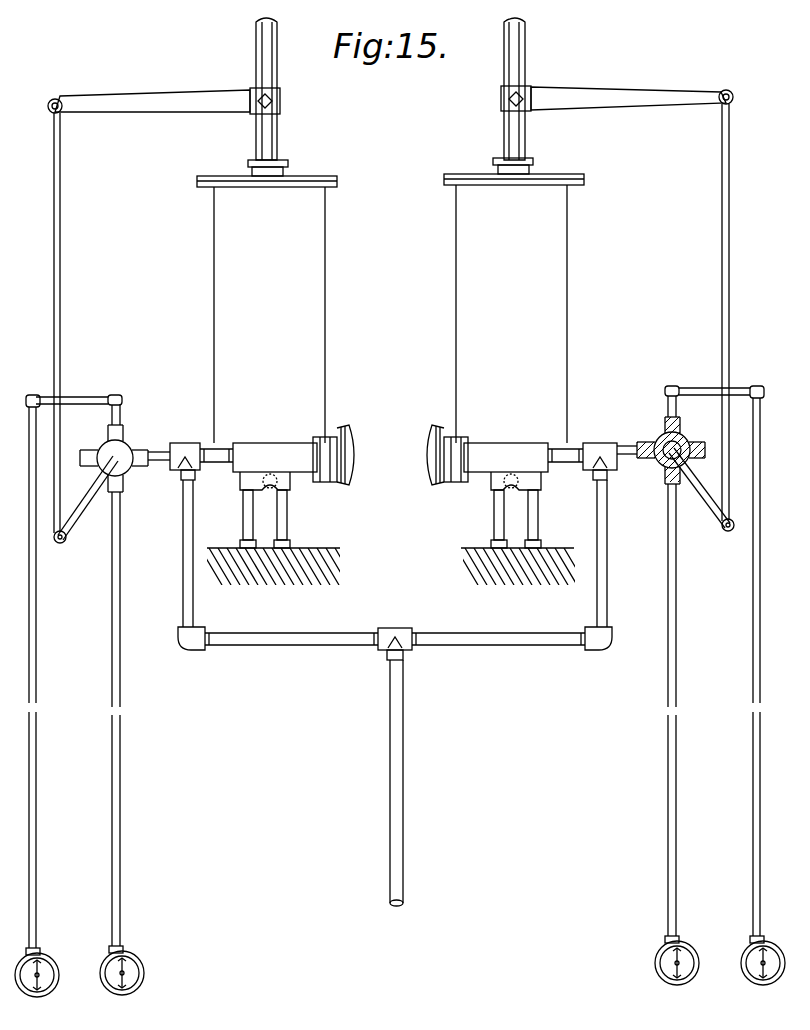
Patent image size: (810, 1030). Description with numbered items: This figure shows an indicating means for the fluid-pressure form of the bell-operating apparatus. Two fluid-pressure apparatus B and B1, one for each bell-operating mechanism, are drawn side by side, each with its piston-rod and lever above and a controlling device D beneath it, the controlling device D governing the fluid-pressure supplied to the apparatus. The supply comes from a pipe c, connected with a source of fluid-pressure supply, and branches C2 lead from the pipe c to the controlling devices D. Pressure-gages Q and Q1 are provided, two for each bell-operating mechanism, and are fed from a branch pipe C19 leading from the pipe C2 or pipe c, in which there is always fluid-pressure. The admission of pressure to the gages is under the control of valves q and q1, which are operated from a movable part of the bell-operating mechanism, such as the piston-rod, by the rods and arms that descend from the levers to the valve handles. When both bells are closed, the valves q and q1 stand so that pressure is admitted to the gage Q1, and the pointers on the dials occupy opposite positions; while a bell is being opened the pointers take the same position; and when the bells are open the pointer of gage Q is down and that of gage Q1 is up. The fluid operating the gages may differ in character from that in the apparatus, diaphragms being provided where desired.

The cylinder B1 is at (192, 230).
The cylinder B is at (588, 230).
The valve q1 is at (118, 456).
The valve q is at (657, 436).
The branch pipe C19 is at (633, 458).
The controlling device D is at (295, 462).
The branch C2 is at (523, 624).
The pipe c is at (405, 781).
The pressure-gage Q is at (357, 709).
The pressure-gage Q1 is at (442, 703).